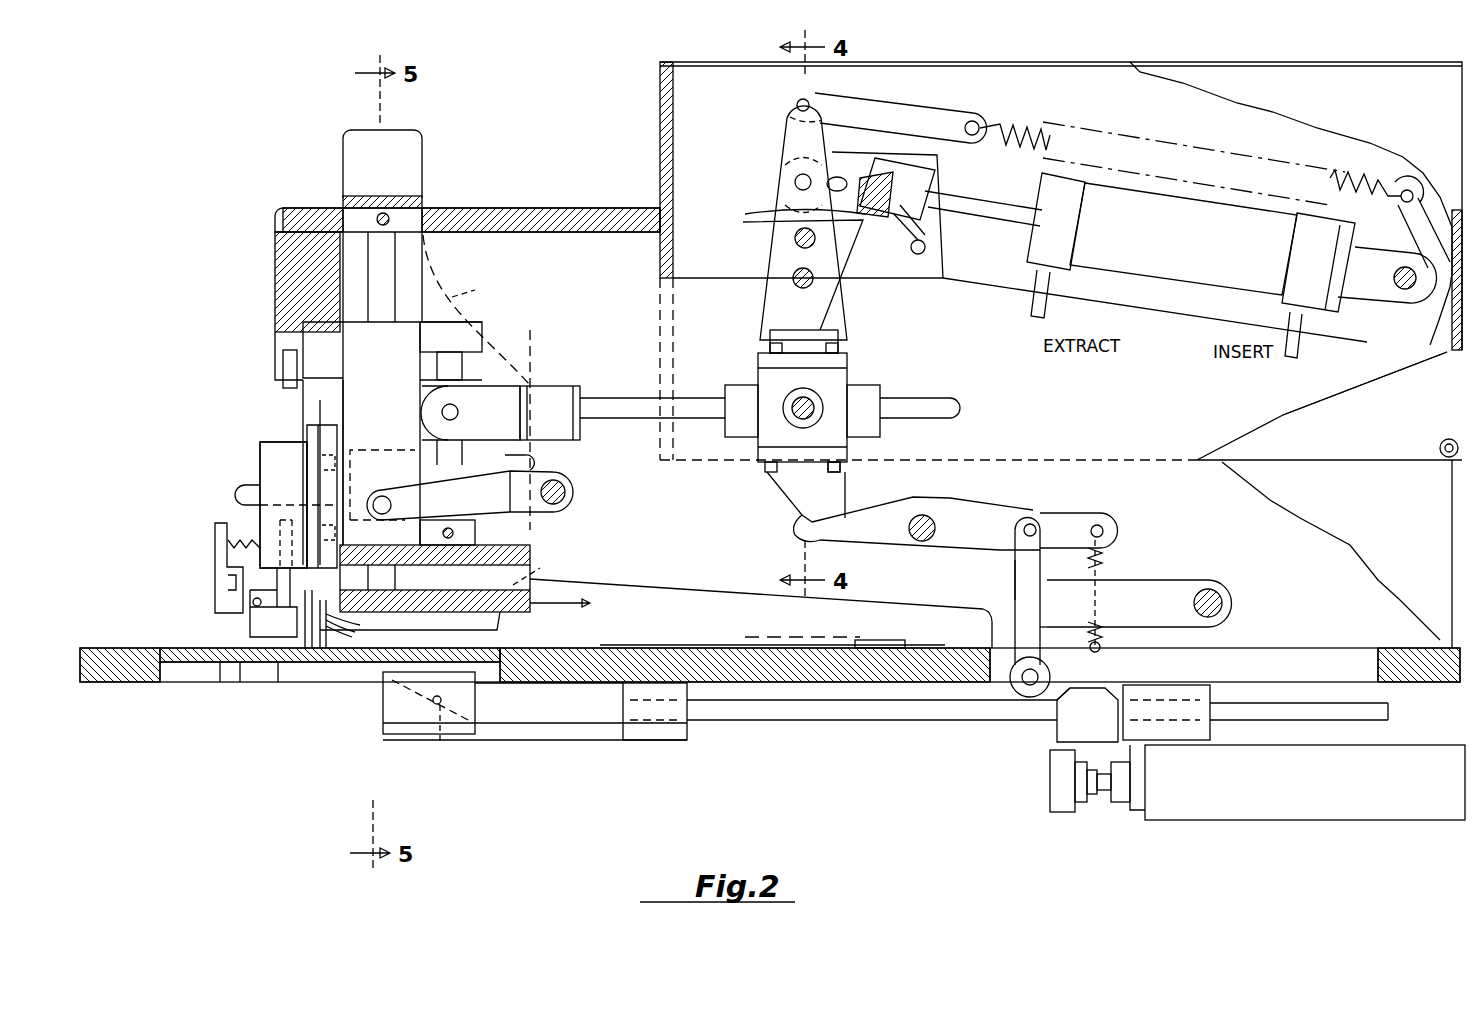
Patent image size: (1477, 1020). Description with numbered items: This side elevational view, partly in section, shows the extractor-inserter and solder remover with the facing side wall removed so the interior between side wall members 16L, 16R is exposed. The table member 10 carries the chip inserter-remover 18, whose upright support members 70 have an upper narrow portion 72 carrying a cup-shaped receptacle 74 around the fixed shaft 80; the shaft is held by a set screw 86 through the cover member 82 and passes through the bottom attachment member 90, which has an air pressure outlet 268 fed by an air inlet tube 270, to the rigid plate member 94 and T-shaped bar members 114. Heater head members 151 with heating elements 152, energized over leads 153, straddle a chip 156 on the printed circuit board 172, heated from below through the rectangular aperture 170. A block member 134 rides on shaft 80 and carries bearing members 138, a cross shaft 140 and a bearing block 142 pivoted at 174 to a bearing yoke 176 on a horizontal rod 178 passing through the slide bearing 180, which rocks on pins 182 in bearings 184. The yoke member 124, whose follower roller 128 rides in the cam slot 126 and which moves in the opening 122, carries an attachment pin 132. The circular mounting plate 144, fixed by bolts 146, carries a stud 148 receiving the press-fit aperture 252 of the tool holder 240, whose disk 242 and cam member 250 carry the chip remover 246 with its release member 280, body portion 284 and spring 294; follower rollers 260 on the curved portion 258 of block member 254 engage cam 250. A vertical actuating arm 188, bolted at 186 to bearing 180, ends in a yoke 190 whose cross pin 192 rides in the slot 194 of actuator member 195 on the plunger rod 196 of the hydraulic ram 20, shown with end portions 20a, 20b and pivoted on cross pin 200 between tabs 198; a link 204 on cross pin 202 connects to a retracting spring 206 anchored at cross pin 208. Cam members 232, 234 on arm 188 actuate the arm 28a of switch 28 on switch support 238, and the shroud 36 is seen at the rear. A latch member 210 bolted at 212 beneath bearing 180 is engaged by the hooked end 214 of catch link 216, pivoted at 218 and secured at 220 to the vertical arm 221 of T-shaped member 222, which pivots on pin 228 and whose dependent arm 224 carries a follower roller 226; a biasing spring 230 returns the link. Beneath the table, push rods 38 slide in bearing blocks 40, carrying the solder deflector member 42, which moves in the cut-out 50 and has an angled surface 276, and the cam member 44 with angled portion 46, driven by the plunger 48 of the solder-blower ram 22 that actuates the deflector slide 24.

The table member 10 is at (1395, 655).
The left side wall member 16L is at (1130, 420).
The right side wall member 16R is at (1325, 540).
The chip inserter-remover mechanism 18 is at (495, 310).
The extract-insert hydraulic ram 20 is at (1172, 278).
The cylinder end cap 20a is at (1063, 250).
The cylinder end cap 20b is at (1292, 256).
The solder-blower-deflector hydraulic ram 22 is at (1240, 820).
The solder deflector slide member 24 is at (532, 754).
The cam actuated switch 28 is at (912, 185).
The switch actuator arm 28a is at (930, 248).
The hinged shroud member 36 is at (1290, 420).
The push rods 38 is at (835, 715).
The bearing blocks 40 is at (675, 740).
The solder deflector member 42 is at (390, 735).
The cam member 44 is at (1090, 695).
The angled portion of cam 46 is at (1070, 690).
The plunger member 48 is at (1062, 790).
The cut-out 50 is at (162, 680).
The upright support members 70 is at (478, 465).
The upper narrow portion 72 is at (470, 291).
The cup-shaped receptacle 74 is at (352, 152).
The shaft 80 is at (396, 272).
The cover member 82 is at (490, 208).
The set screw 86 is at (390, 216).
The bottom side wall attachment member 90 is at (532, 555).
The rigid plate member 94 is at (530, 612).
The T-shaped bar member 114 is at (498, 622).
The rectangular opening 122 is at (528, 462).
The yoke member 124 is at (556, 480).
The cam slot 126 is at (358, 498).
The follower roller 128 is at (392, 506).
The attachment pin 132 is at (566, 492).
The block member 134 is at (398, 337).
The bearing members 138 is at (470, 332).
The cross shaft 140 is at (455, 365).
The bearing block 142 is at (478, 383).
The circular mounting plate 144 is at (324, 426).
The bolts 146 is at (352, 442).
The mounting stud 148 is at (237, 493).
The heater head members 151 is at (316, 682).
The heater element 152 is at (332, 660).
The leads 153 is at (340, 632).
The chip 156 is at (860, 640).
The rectangular aperture 170 is at (240, 682).
The printed circuit board 172 is at (660, 645).
The pivot 174 is at (460, 412).
The bearing yoke 176 is at (555, 395).
The horizontal rod 178 is at (952, 410).
The slide bearing 180 is at (870, 425).
The pins 182 is at (815, 405).
The bearings 184 is at (790, 400).
The bolts 186 is at (845, 343).
The vertical actuating arm 188 is at (782, 306).
The yoke member 190 is at (795, 128).
The cross pin 192 is at (795, 184).
The slot 194 is at (800, 165).
The actuator member 195 is at (872, 235).
The plunger rod 196 is at (1010, 214).
The projecting tabs 198 is at (1390, 340).
The cross pin 200 is at (1410, 292).
The cross pin 202 is at (809, 102).
The link 204 is at (935, 118).
The retracting spring 206 is at (1045, 132).
The cross pin 208 is at (1407, 190).
The latch member 210 is at (800, 497).
The bolts 212 is at (845, 480).
The hooked end 214 is at (795, 528).
The catch link 216 is at (938, 550).
The pivot 218 is at (932, 520).
The pivot 220 is at (1040, 520).
The vertical arm 221 is at (1018, 580).
The T-shaped member 222 is at (1165, 590).
The lower dependent arm 224 is at (1020, 640).
The cam follower roller 226 is at (1015, 700).
The pin 228 is at (1225, 605).
The biasing spring 230 is at (1105, 568).
The cam member 232 is at (828, 278).
The cam member 234 is at (765, 235).
The switch support 238 is at (925, 268).
The tool holder 240 is at (236, 448).
The disk-like member 242 is at (315, 428).
The chip extractor member 246 is at (206, 587).
The cam member 250 is at (280, 452).
The mounting aperture 252 is at (290, 485).
The block member 254 is at (278, 252).
The radially curved portion 258 is at (290, 336).
The follower roller 260 is at (286, 372).
The air pressure outlet 268 is at (540, 568).
The air inlet tube 270 is at (592, 605).
The hidden hole 276 is at (440, 742).
The chip release member 280 is at (217, 547).
The lower enlarged body portion 284 is at (285, 621).
The spring 294 is at (230, 530).